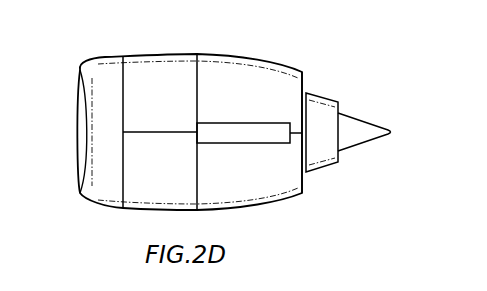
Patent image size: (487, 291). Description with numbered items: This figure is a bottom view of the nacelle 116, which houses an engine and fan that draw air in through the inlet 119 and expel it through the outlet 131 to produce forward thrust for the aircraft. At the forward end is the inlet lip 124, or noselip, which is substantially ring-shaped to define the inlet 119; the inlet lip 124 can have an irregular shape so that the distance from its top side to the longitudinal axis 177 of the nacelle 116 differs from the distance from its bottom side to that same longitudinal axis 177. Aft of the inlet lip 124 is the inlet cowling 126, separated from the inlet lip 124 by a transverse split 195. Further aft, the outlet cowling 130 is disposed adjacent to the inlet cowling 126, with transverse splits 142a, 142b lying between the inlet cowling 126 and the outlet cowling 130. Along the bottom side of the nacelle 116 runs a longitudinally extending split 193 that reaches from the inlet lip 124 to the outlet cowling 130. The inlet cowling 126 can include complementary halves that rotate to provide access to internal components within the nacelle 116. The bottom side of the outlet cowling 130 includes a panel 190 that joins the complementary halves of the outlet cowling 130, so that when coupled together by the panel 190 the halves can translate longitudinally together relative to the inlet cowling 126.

The nacelle 116 is at (228, 29).
The inlet 119 is at (63, 89).
The inlet lip 124 is at (103, 76).
The longitudinally extending split 193 is at (140, 133).
The transverse split 195 is at (127, 58).
The transverse split 142a is at (201, 86).
The transverse split 142b is at (184, 188).
The inlet cowling 126 is at (158, 185).
The outlet cowling 130 is at (240, 196).
The panel 190 is at (255, 134).
The outlet 131 is at (320, 78).
The longitudinal axis 177 is at (408, 133).